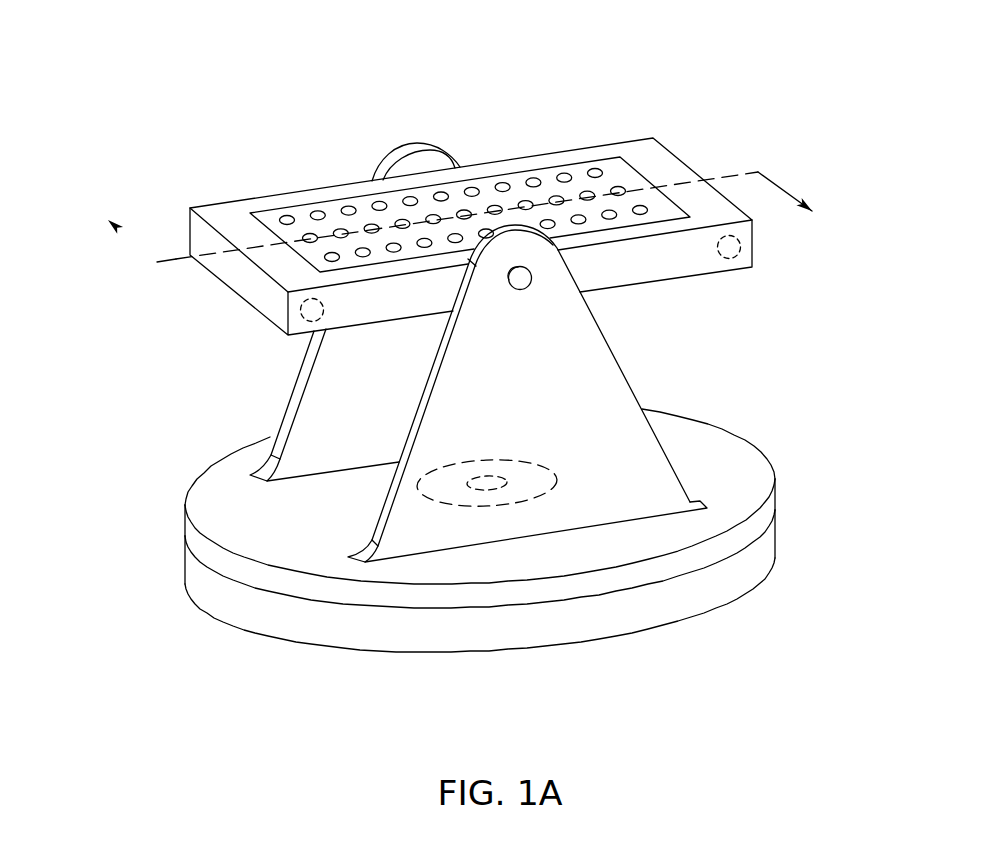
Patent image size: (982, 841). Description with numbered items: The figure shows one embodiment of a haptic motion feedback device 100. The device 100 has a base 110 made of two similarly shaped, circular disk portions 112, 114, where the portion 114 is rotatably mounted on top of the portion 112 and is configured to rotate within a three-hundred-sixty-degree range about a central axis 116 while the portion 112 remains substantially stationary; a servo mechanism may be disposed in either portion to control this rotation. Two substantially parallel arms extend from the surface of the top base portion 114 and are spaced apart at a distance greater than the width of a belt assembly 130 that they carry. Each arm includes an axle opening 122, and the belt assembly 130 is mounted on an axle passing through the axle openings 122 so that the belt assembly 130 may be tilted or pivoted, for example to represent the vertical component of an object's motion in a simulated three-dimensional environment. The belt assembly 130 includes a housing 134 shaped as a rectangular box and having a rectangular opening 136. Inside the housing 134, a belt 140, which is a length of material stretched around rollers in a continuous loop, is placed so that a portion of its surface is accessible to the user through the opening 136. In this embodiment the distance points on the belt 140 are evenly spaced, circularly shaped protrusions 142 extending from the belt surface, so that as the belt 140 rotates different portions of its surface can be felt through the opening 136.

The haptic motion feedback device 100 is at (328, 755).
The base 110 is at (186, 604).
The portion 112 is at (253, 607).
The portion 114 is at (195, 537).
The central axis 116 is at (493, 485).
The axle opening 122 is at (523, 284).
The belt assembly 130 is at (612, 85).
The housing 134 is at (242, 210).
The opening 136 is at (643, 171).
The belt 140 is at (490, 198).
The protrusions 142 is at (288, 216).